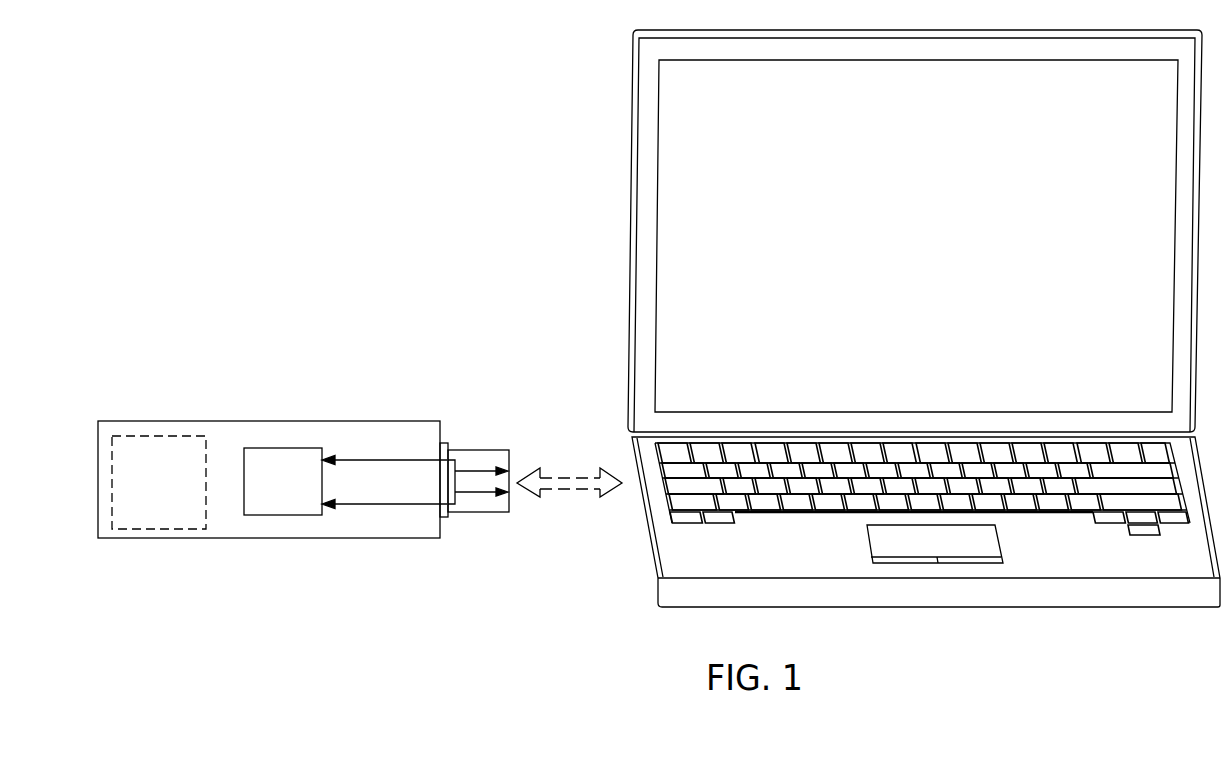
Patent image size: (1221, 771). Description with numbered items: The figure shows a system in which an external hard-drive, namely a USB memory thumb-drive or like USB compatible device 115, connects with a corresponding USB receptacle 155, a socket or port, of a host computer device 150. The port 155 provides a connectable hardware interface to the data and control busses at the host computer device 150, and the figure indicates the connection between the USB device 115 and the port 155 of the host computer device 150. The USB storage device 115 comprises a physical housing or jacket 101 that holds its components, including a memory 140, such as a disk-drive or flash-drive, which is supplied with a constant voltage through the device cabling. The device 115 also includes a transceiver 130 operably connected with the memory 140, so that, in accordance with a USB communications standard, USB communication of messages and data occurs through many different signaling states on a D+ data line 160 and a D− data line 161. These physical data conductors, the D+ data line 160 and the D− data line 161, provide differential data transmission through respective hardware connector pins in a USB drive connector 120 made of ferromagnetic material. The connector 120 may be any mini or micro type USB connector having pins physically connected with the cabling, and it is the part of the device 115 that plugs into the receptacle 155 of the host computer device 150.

The physical housing 101 is at (190, 538).
The USB compatible device 115 is at (249, 412).
The USB drive connector 120 is at (483, 450).
The transceiver 130 is at (288, 501).
The memory 140 is at (122, 467).
The host computer device 150 is at (578, 190).
The USB receptacle 155 is at (622, 464).
The D+ data line 160 is at (388, 459).
The D− data line 161 is at (388, 505).